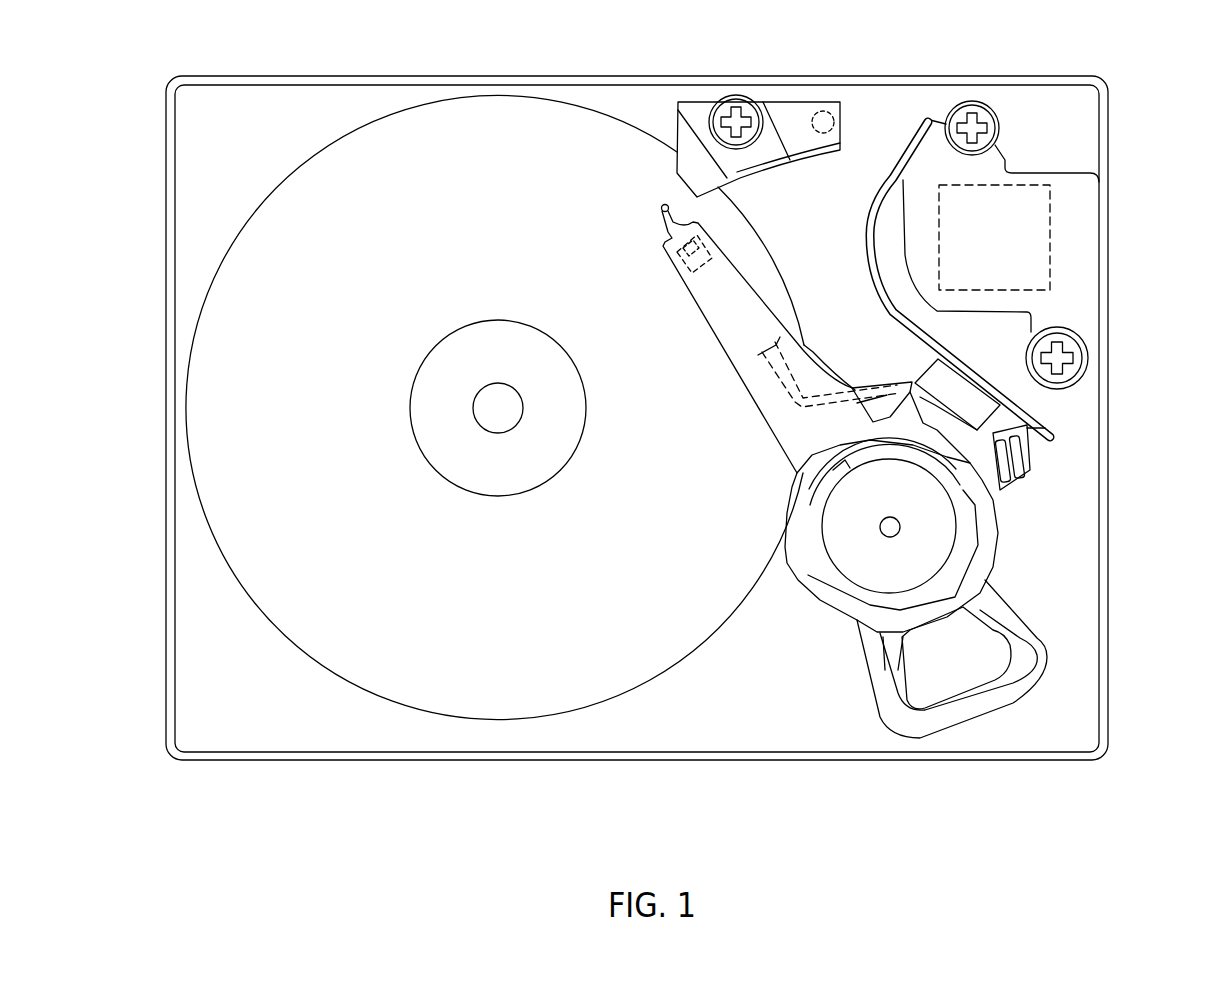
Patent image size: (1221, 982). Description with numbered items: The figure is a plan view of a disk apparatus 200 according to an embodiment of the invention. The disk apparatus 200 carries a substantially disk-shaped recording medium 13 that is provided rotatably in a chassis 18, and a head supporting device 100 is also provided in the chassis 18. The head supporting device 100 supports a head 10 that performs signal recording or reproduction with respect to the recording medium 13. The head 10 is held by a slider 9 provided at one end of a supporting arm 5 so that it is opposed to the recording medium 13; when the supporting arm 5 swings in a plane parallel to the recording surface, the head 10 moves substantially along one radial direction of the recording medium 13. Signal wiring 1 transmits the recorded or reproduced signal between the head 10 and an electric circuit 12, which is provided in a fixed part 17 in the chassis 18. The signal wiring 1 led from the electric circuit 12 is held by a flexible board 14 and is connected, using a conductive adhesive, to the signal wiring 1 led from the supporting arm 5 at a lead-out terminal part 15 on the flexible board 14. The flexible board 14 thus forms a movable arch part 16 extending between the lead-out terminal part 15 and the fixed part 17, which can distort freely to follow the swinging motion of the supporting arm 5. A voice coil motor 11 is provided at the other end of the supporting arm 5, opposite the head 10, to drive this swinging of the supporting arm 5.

The signal wiring 1 is at (785, 395).
The supporting arm 5 is at (708, 327).
The slider 9 is at (695, 268).
The head 10 is at (677, 250).
The voice coil motor 11 is at (898, 705).
The electric circuit 12 is at (1052, 237).
The recording medium 13 is at (331, 144).
The flexible board 14 is at (1048, 414).
The lead-out terminal part 15 is at (928, 370).
The movable arch part 16 is at (868, 225).
The fixed part 17 is at (1007, 160).
The chassis 18 is at (243, 705).
The head supporting device 100 is at (760, 460).
The disk apparatus 200 is at (1160, 117).